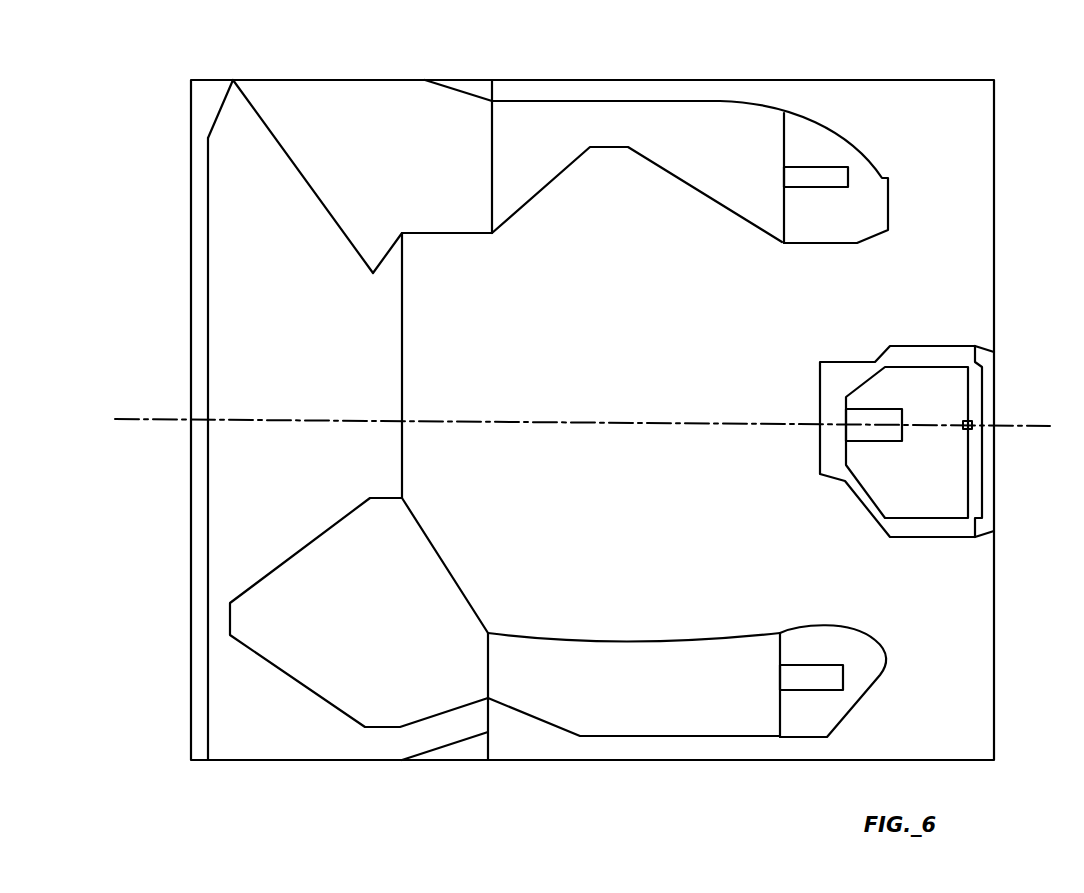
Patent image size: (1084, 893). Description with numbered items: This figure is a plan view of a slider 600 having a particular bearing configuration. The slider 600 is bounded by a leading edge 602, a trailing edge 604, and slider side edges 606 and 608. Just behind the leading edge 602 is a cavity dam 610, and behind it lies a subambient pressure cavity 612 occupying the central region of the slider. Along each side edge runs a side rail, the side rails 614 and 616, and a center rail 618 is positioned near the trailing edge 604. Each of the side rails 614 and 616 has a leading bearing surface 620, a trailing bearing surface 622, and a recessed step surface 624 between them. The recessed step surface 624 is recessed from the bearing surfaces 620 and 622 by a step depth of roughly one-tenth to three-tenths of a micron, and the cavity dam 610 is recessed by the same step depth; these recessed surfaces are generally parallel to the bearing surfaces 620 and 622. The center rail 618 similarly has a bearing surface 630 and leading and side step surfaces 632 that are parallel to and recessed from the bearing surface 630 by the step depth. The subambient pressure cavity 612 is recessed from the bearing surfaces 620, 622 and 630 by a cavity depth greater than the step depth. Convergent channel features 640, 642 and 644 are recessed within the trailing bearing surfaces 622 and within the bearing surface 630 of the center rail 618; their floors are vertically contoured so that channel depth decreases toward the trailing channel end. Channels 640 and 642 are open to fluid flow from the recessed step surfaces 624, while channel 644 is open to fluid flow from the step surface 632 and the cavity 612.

The slider 600 is at (155, 68).
The leading edge 602 is at (191, 362).
The trailing edge 604 is at (994, 170).
The slider side edge 606 is at (462, 90).
The slider side edge 608 is at (455, 762).
The cavity dam 610 is at (222, 508).
The subambient pressure cavity 612 is at (570, 353).
The side rail 614 is at (313, 100).
The side rail 616 is at (302, 692).
The center rail 618 is at (812, 358).
The leading bearing surface 620 is at (348, 92).
The trailing bearing surface 622 is at (808, 140).
The recessed step surface 624 is at (675, 108).
The bearing surface 630 is at (946, 411).
The leading and side step surfaces 632 is at (826, 438).
The convergent channel feature 640 is at (840, 165).
The convergent channel feature 642 is at (827, 660).
The convergent channel feature 644 is at (868, 443).